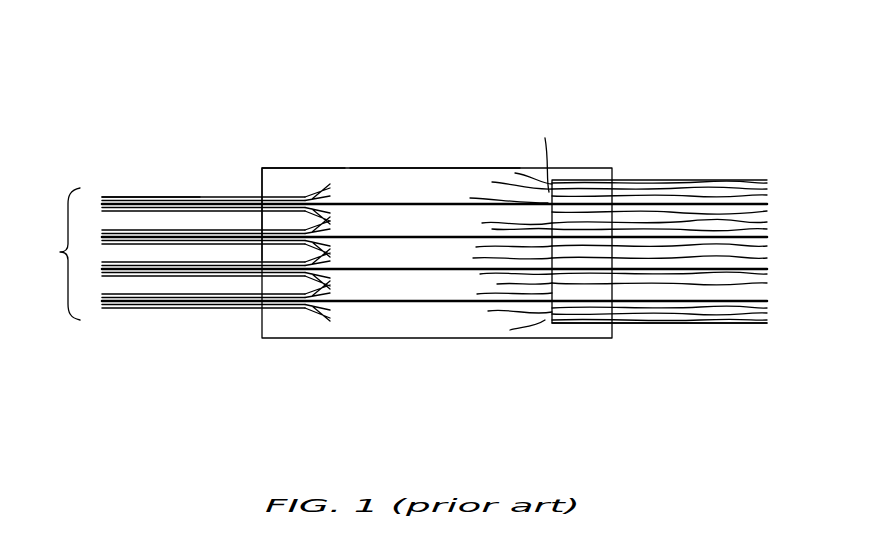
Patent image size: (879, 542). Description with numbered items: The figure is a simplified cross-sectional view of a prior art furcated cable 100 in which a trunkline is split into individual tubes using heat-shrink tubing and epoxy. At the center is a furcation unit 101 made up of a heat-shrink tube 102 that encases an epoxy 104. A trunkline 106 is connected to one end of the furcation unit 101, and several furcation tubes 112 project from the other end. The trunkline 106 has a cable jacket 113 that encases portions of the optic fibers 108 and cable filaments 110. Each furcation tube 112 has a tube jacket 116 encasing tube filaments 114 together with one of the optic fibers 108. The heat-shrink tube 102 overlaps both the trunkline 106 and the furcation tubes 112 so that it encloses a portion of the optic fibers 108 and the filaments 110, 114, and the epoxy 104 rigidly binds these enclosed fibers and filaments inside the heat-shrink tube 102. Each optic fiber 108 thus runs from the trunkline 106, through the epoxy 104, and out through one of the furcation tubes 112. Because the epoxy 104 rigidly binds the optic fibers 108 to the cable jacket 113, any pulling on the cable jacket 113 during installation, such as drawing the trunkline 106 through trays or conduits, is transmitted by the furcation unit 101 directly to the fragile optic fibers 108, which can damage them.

The furcated cable 100 is at (575, 64).
The furcation unit 101 is at (350, 347).
The heat-shrink tube 102 is at (334, 167).
The epoxy 104 is at (422, 178).
The trunkline 106 is at (692, 347).
The optic fibers 108 is at (225, 296).
The cable filaments 110 is at (492, 182).
The furcation tubes 112 is at (60, 252).
The cable jacket 113 is at (677, 181).
The tube filaments 114 is at (310, 193).
The tube jacket 116 is at (157, 197).